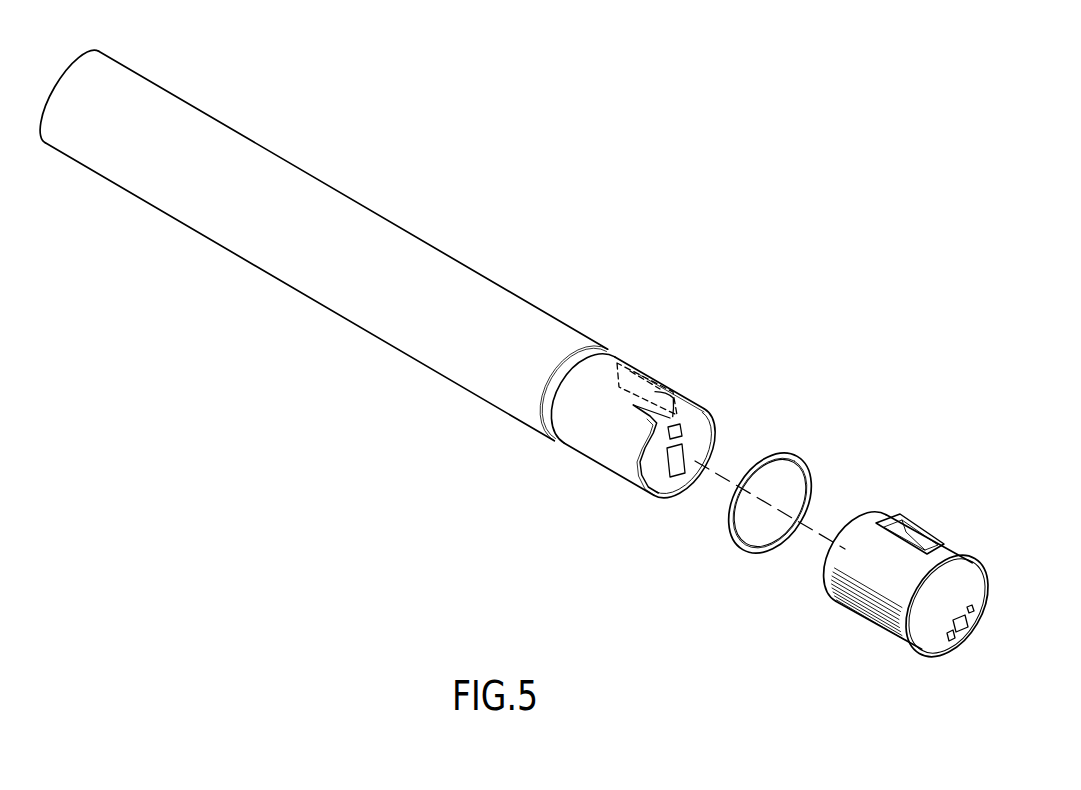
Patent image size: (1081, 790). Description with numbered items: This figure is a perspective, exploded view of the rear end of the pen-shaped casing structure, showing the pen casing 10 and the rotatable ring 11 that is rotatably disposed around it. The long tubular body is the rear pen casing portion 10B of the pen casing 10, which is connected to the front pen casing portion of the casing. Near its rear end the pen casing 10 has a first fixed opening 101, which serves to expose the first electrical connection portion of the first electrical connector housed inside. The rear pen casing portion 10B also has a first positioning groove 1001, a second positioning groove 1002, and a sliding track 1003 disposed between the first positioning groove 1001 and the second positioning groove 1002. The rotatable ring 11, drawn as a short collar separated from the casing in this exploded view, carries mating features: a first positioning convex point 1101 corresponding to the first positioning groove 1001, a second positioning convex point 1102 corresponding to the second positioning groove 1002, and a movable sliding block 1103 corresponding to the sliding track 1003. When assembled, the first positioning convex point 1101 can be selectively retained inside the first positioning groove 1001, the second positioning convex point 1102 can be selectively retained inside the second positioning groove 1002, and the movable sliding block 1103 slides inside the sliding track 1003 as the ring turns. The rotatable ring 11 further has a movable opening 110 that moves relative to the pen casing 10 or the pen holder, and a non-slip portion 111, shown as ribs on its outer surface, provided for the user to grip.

The pen casing 10 is at (320, 420).
The rear pen casing portion 10B is at (315, 282).
The first fixed opening 101 is at (647, 382).
The first positioning groove 1001 is at (692, 433).
The second positioning groove 1002 is at (617, 473).
The sliding track 1003 is at (658, 468).
The rotatable ring 11 is at (863, 535).
The movable opening 110 is at (928, 545).
The non-slip portion 111 is at (871, 616).
The first positioning convex point 1101 is at (972, 608).
The second positioning convex point 1102 is at (950, 640).
The movable sliding block 1103 is at (972, 630).